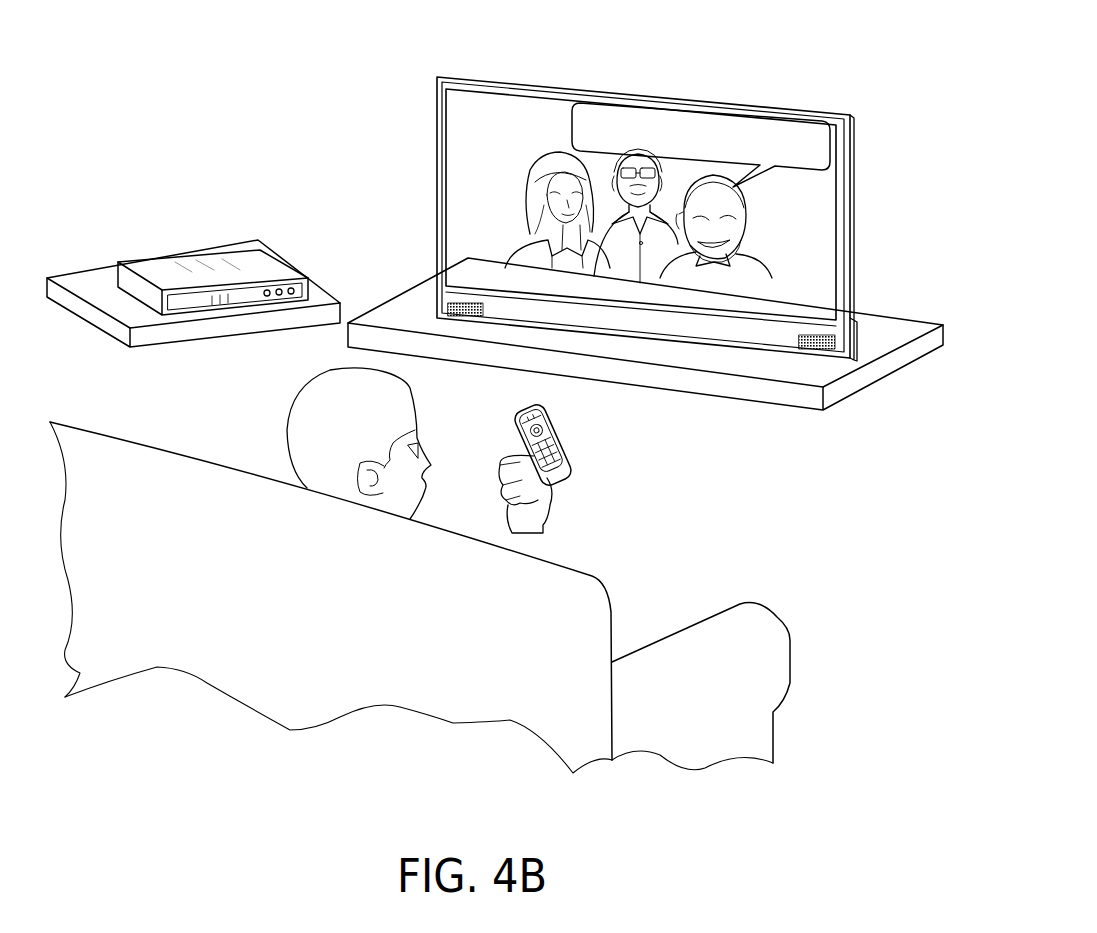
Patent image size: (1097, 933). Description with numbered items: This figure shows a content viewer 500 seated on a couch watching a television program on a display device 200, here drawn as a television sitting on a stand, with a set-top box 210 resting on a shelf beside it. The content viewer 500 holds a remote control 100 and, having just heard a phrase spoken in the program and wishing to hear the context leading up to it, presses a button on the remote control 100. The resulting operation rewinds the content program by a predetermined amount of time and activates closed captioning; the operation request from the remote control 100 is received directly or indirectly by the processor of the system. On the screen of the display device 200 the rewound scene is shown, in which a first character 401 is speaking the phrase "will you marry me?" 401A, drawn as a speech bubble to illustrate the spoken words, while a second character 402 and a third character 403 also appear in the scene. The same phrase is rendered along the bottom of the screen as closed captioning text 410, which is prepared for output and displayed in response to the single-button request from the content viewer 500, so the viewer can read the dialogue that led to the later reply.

The remote control 100 is at (572, 430).
The display device 200 is at (663, 99).
The set-top box 210 is at (253, 258).
The first character 401 is at (722, 275).
The phrase "will you marry me?" 401A is at (828, 133).
The second character 402 is at (510, 243).
The third character 403 is at (611, 210).
The closed captioning text 410 is at (802, 305).
The content viewer 500 is at (277, 399).